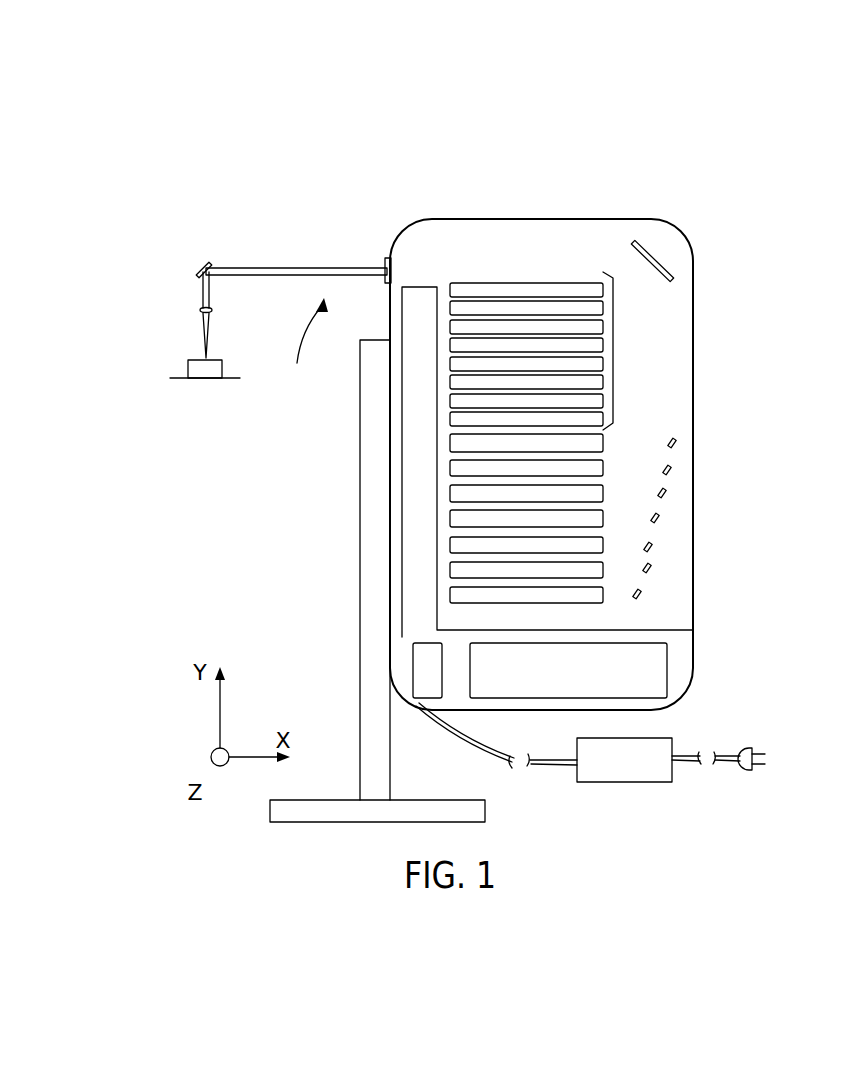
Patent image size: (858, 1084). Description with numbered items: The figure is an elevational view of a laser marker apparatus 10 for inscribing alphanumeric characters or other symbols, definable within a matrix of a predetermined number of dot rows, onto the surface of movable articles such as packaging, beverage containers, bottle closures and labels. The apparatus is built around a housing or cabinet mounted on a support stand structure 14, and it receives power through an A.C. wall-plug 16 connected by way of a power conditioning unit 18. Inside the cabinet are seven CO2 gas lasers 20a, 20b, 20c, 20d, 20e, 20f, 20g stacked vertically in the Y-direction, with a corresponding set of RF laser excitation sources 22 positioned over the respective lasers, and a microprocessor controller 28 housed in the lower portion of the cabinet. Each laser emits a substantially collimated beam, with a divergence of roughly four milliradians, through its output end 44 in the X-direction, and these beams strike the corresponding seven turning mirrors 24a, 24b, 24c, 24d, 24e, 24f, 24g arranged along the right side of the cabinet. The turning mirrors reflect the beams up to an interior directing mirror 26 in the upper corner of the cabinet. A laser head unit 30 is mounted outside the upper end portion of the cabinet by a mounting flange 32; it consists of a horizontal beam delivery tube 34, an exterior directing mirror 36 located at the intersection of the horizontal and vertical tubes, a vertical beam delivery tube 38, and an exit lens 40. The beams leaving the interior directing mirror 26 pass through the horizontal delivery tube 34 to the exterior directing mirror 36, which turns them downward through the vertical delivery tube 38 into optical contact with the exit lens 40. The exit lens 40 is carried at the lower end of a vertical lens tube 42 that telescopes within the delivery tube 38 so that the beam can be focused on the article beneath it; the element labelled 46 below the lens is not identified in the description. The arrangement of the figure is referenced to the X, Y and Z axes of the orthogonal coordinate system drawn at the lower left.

The laser marker apparatus 10 is at (677, 201).
The support stand structure 14 is at (370, 638).
The A.C. wall-plug 16 is at (750, 748).
The power conditioning unit 18 is at (606, 773).
The laser 20a is at (450, 443).
The laser 20b is at (450, 469).
The laser 20c is at (450, 494).
The laser 20d is at (450, 519).
The laser 20e is at (450, 546).
The laser 20f is at (450, 571).
The laser 20g is at (450, 596).
The RF laser excitation sources 22 is at (618, 347).
The turning mirror 24a is at (675, 440).
The turning mirror 24b is at (670, 468).
The turning mirror 24c is at (665, 490).
The turning mirror 24d is at (658, 516).
The turning mirror 24e is at (650, 545).
The turning mirror 24f is at (650, 566).
The turning mirror 24g is at (640, 591).
The interior directing mirror 26 is at (658, 257).
The microprocessor controller 28 is at (552, 686).
The laser head unit 30 is at (298, 347).
The mounting flange 32 is at (386, 258).
The horizontal beam delivery tube 34 is at (290, 268).
The exterior directing mirror 36 is at (201, 264).
The vertical beam delivery tube 38 is at (200, 286).
The exit lens 40 is at (213, 310).
The vertical lens tube 42 is at (209, 332).
The output ends 44 is at (614, 428).
The workpiece 46 is at (188, 366).